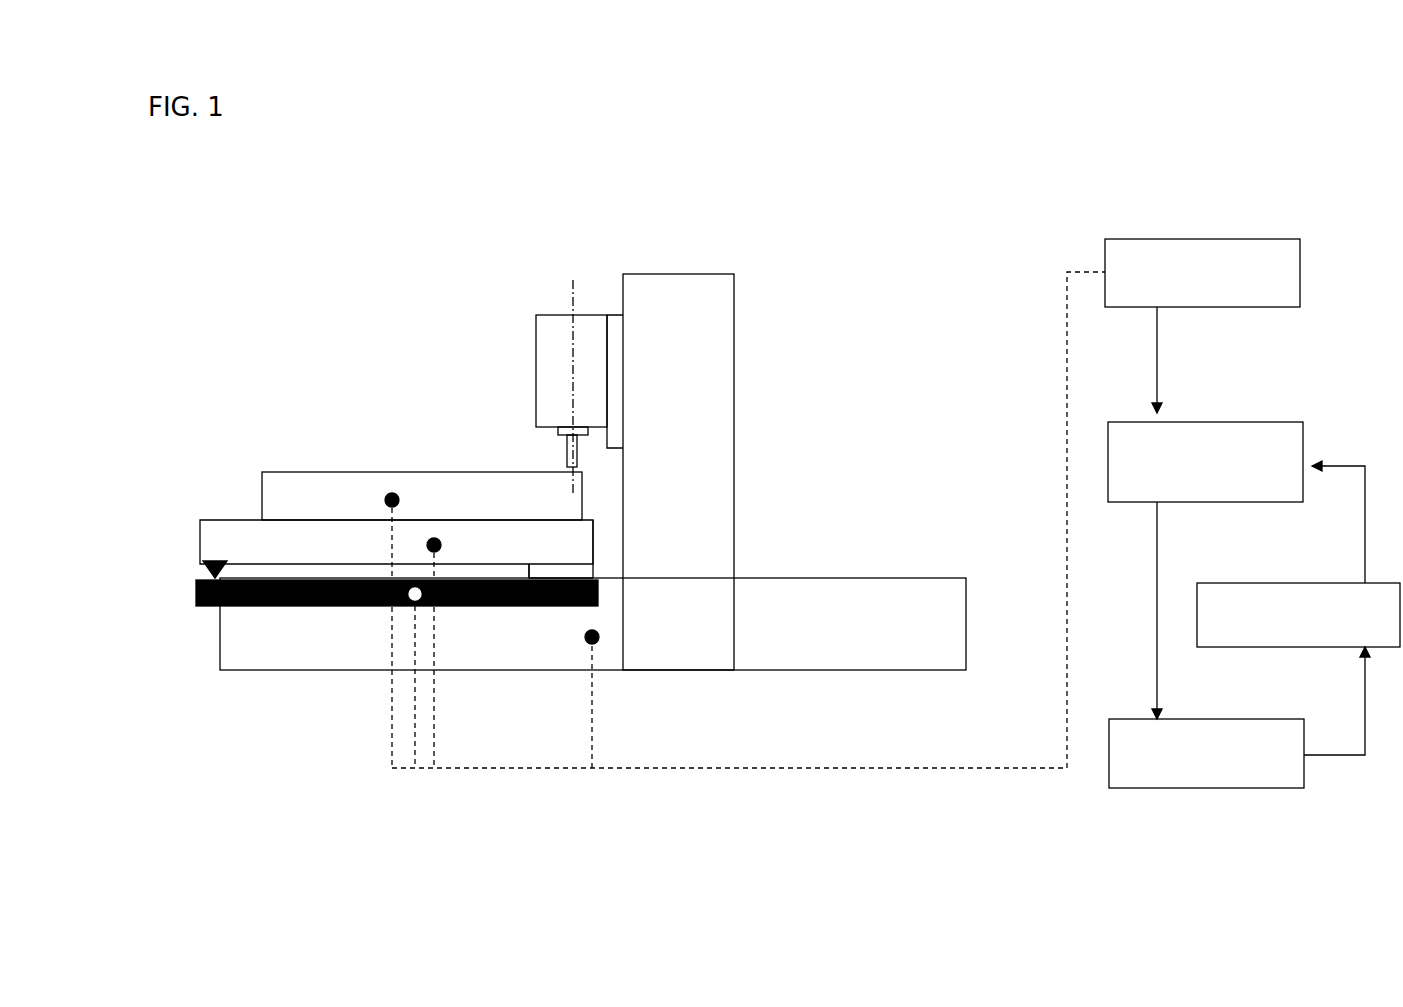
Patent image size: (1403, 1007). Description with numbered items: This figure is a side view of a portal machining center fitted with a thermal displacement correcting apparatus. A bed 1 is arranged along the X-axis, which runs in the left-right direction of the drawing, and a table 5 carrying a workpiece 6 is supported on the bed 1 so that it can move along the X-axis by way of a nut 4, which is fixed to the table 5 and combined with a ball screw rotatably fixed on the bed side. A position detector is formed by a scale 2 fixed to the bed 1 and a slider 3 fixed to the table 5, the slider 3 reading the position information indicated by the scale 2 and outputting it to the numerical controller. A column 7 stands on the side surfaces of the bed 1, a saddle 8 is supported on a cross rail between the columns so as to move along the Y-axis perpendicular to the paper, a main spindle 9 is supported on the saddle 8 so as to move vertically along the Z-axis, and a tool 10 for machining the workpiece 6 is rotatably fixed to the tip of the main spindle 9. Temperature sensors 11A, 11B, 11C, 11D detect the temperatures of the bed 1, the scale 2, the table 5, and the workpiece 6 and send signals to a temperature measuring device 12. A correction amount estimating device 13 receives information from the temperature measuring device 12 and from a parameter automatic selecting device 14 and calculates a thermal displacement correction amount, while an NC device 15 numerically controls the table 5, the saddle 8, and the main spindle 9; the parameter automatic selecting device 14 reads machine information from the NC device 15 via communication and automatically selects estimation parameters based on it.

The bed 1 is at (885, 611).
The scale 2 is at (598, 606).
The slider 3 is at (204, 566).
The nut 4 is at (588, 576).
The table 5 is at (207, 533).
The workpiece 6 is at (347, 493).
The column 7 is at (680, 286).
The saddle 8 is at (612, 328).
The main spindle 9 is at (557, 327).
The tool 10 is at (566, 458).
The temperature sensor 11A is at (569, 698).
The temperature sensor 11B is at (444, 678).
The temperature sensor 11C is at (454, 652).
The temperature sensor 11D is at (395, 604).
The temperature measuring device 12 is at (1163, 240).
The correction amount estimating device 13 is at (1226, 422).
The parameter automatic selecting device 14 is at (1305, 583).
The NC device 15 is at (1113, 788).